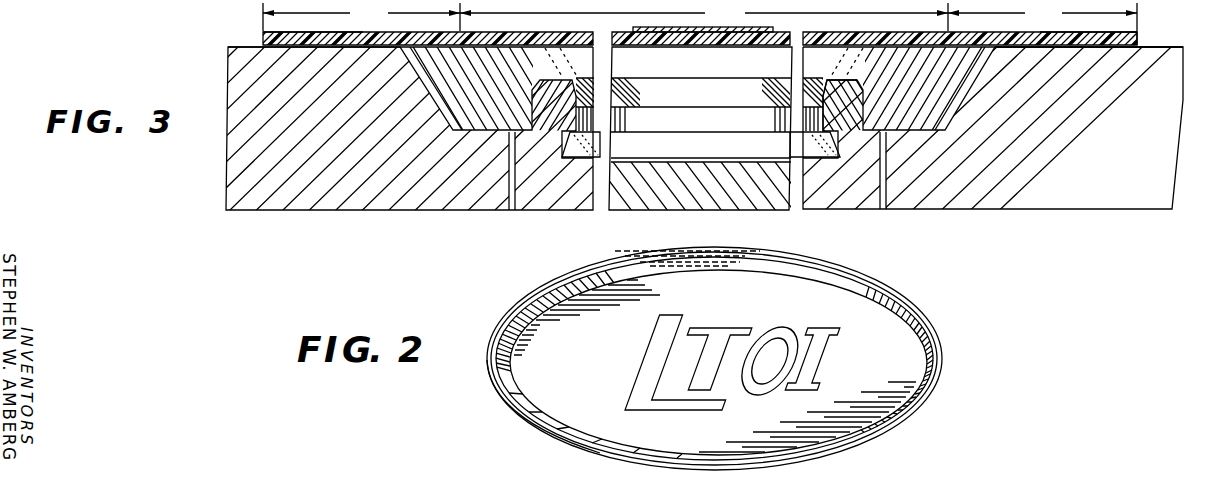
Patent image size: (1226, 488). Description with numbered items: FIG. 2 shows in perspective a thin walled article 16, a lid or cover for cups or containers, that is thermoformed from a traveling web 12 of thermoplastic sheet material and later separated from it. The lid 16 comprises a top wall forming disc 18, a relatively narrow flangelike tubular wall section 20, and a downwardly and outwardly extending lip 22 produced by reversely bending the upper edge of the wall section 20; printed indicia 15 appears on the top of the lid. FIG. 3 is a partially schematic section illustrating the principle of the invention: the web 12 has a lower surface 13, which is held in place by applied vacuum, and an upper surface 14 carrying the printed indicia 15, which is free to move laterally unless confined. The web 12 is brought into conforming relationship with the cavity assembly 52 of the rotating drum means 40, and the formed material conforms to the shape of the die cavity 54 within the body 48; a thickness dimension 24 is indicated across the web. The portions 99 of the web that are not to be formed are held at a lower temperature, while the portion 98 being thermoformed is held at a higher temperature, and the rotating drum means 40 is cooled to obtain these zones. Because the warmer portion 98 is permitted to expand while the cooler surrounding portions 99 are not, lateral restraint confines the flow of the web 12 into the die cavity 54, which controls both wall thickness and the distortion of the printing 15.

In FIG. 3, the web 12 is at (1138, 45).
In FIG. 3, the lower surface 13 is at (1140, 48).
In FIG. 3, the upper surface 14 is at (1137, 32).
In FIG. 3, the printed indicia means 15 is at (772, 30).
In FIG. 2, the printed indicia means 15 is at (840, 328).
In FIG. 2, the thin walled article 16 is at (946, 353).
In FIG. 2, the top wall forming disc 18 is at (822, 290).
In FIG. 2, the flangelike tubular wall section 20 is at (538, 284).
In FIG. 2, the lip 22 is at (916, 414).
In FIG. 3, the thickness dimension 24 is at (651, 15).
In FIG. 3, the rotating drum means 40 is at (1180, 175).
In FIG. 3, the base block 48 is at (240, 47).
In FIG. 3, the cavity assembly 52 is at (860, 86).
In FIG. 3, the die cavity 54 is at (832, 80).
In FIG. 3, the portion being thermoformed 98 is at (519, 37).
In FIG. 3, the portion not to be formed 99 is at (282, 36).